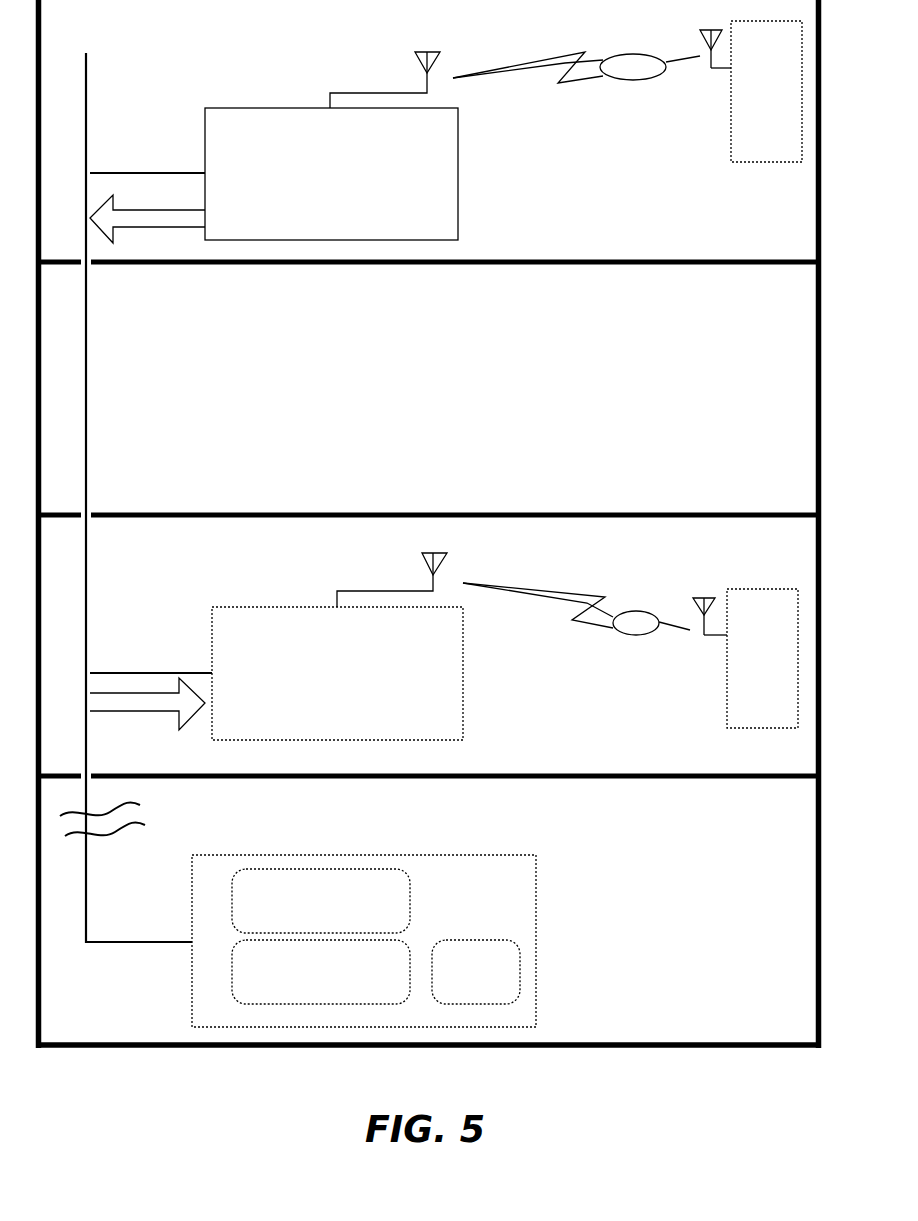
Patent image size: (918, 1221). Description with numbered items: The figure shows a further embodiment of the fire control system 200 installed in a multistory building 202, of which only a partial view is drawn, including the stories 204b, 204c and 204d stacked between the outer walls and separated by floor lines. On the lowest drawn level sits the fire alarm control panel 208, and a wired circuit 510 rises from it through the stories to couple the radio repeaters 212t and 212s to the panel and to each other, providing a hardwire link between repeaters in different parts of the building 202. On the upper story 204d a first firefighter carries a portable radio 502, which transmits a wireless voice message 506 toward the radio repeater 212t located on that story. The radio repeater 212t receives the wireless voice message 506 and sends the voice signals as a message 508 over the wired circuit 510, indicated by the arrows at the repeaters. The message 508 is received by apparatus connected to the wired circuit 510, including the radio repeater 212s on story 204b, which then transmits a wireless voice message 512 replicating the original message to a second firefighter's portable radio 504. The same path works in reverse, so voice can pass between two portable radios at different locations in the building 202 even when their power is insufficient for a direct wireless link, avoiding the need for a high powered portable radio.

The fire control system 200 is at (246, 70).
The building 202 is at (613, 1047).
The story 204b is at (565, 665).
The story 204c is at (564, 403).
The story 204d is at (575, 163).
The fire alarm control panel 208 is at (537, 940).
The radio repeater 212s is at (412, 646).
The radio repeater 212t is at (404, 146).
The portable radio 502 is at (751, 91).
The portable radio 504 is at (745, 658).
The wireless voice message 506 is at (633, 80).
The message 508 is at (123, 210).
The wired circuit 510 is at (88, 435).
The wireless voice message 512 is at (636, 635).